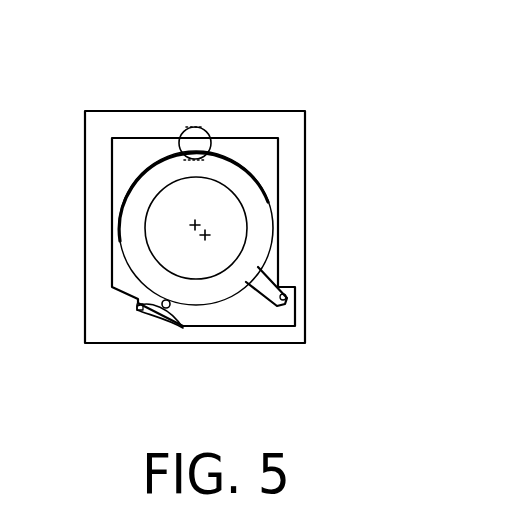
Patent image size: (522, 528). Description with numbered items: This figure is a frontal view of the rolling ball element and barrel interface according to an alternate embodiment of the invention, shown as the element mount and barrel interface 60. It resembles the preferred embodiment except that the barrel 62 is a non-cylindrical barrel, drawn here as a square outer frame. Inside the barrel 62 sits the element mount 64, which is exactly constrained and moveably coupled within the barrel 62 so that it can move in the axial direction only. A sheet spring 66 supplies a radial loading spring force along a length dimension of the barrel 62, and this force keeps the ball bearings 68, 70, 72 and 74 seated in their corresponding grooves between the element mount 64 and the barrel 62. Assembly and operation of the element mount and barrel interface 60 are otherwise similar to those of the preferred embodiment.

The element mount and barrel interface 60 is at (392, 97).
The barrel 62 is at (297, 200).
The element mount 64 is at (126, 210).
The sheet spring 66 is at (170, 312).
The ball bearing 68 is at (160, 315).
The ball bearing 70 is at (192, 140).
The ball bearing 72 is at (194, 127).
The ball bearing 74 is at (288, 292).